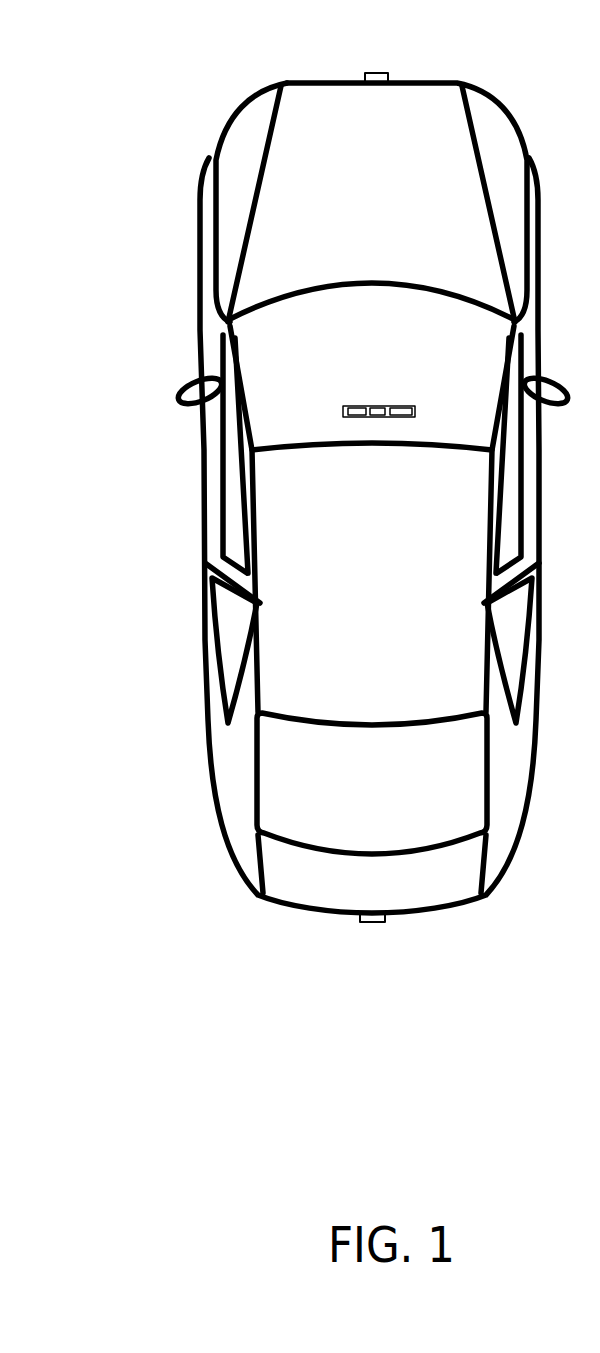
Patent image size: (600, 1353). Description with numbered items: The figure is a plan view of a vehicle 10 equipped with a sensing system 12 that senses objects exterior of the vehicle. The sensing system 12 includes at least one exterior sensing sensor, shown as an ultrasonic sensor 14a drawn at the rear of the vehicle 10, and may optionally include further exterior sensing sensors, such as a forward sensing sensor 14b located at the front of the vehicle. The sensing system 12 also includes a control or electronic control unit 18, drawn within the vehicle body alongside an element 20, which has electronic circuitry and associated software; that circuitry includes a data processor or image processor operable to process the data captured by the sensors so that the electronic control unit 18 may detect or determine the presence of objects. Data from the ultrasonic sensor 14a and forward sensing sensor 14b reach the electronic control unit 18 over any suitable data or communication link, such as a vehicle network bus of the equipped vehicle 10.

The vehicle 10 is at (137, 98).
The sensing system 12 is at (336, 930).
The ultrasonic sensor 14a is at (385, 922).
The forward sensing sensor 14b is at (381, 73).
The electronic control unit 18 is at (376, 406).
The display device 20 is at (416, 406).